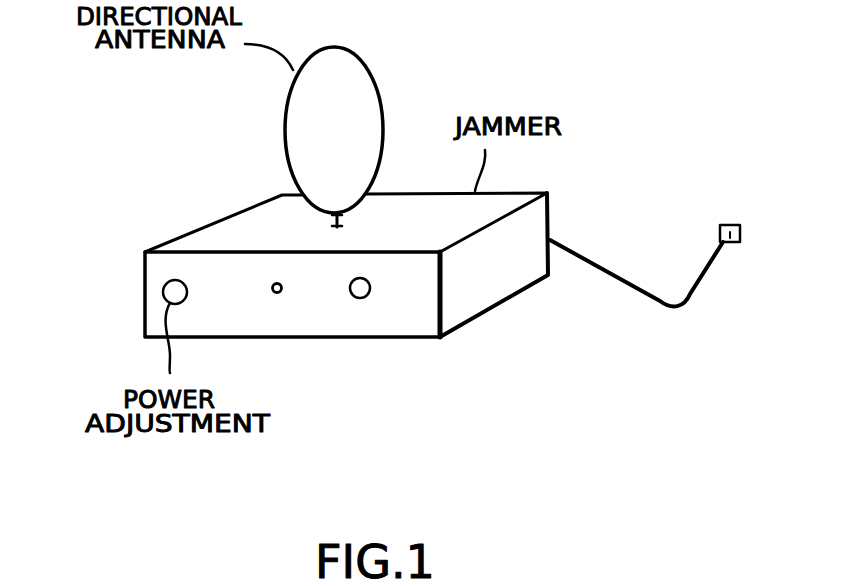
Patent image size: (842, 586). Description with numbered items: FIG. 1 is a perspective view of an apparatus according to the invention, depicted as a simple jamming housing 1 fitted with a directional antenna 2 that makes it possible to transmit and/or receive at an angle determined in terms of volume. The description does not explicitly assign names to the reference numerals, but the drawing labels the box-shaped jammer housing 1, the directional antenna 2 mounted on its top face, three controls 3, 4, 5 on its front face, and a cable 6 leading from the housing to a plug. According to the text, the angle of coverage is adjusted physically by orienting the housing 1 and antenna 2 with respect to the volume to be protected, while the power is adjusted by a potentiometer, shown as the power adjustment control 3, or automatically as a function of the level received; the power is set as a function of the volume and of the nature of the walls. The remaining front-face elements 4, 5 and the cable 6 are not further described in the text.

The jammer housing 1 is at (218, 222).
The directional antenna 2 is at (377, 82).
The power adjustment control 3 is at (162, 292).
The indicator 4 is at (283, 291).
The control switch 5 is at (370, 290).
The power cable with plug 6 is at (635, 282).